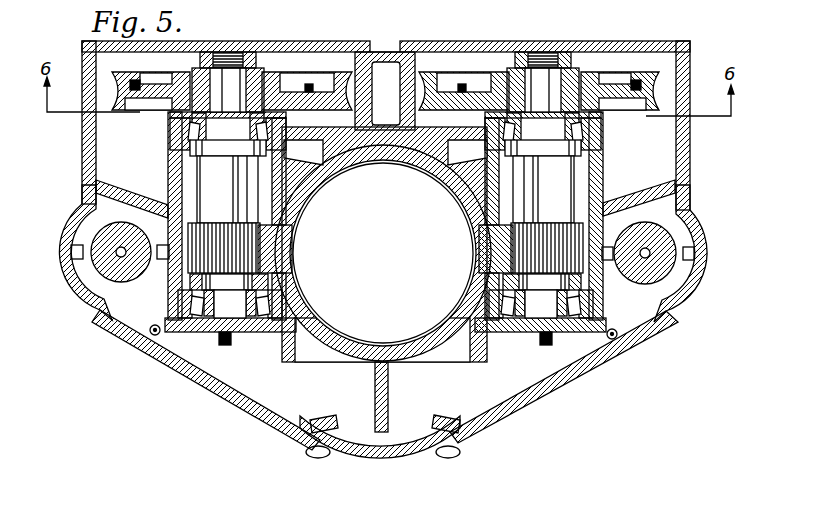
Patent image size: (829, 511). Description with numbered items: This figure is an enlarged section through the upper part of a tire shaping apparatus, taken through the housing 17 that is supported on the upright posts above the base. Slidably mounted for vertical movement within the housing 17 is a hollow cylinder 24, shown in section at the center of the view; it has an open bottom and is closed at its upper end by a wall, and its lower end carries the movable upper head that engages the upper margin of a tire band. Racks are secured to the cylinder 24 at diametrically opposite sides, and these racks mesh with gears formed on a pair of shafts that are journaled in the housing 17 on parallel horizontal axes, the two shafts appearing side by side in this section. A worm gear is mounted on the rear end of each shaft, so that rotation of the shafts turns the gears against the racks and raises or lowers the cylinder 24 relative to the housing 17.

The housing 17 is at (690, 198).
The hollow cylinder 24 is at (442, 342).